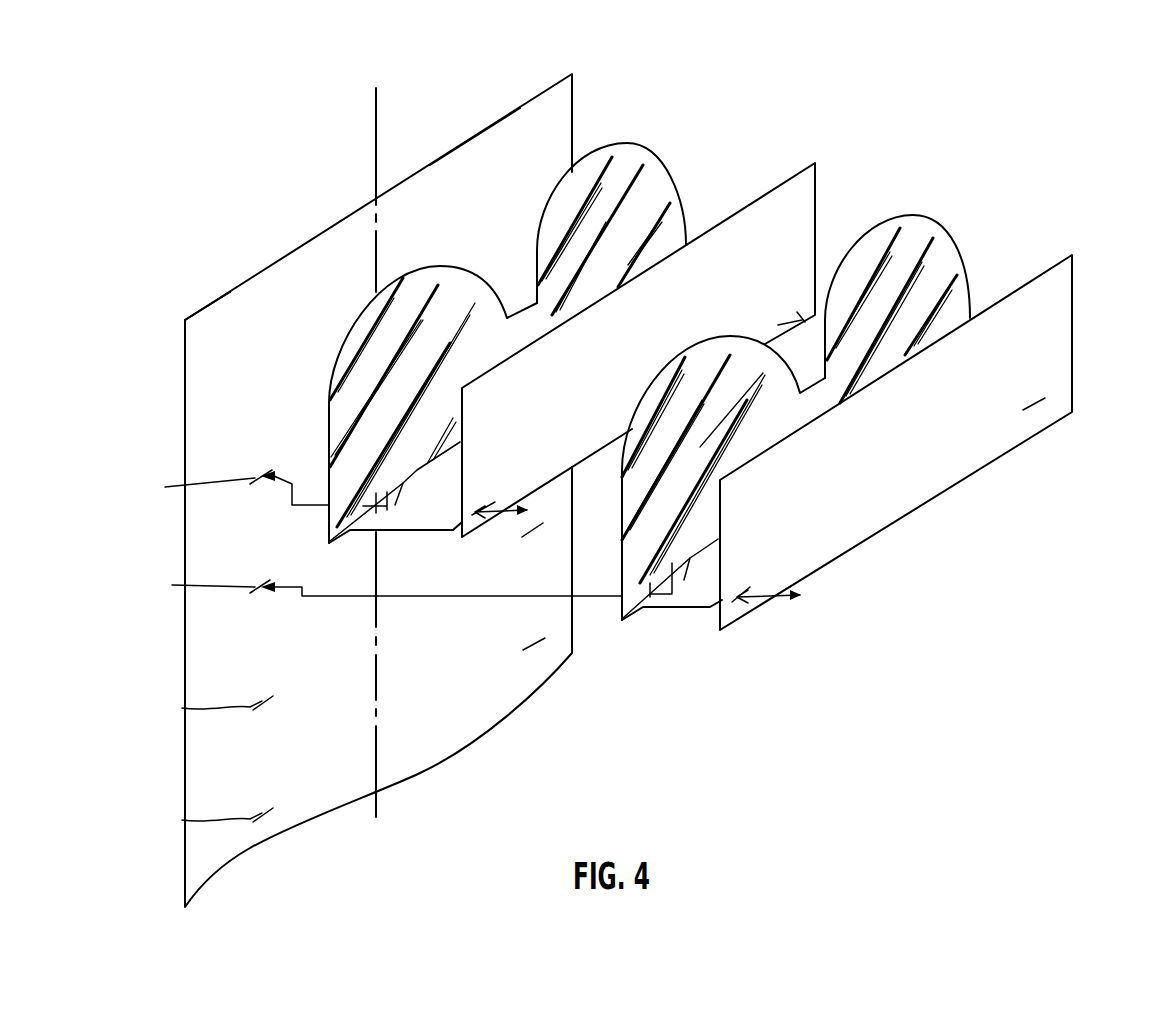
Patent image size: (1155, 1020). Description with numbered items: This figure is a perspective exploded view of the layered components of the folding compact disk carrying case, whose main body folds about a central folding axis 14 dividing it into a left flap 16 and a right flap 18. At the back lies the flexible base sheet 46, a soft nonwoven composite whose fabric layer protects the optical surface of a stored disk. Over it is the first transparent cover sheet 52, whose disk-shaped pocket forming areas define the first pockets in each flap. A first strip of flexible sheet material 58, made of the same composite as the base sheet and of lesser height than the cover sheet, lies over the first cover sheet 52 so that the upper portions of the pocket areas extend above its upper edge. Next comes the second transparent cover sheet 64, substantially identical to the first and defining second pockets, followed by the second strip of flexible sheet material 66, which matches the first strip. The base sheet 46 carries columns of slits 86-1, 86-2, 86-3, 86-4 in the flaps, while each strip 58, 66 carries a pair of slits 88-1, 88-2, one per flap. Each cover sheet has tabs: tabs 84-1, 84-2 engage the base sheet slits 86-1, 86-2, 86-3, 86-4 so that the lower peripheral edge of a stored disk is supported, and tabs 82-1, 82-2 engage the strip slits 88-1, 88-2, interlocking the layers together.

The central folding axis 14 is at (370, 425).
The left flap 16 is at (313, 282).
The right flap 18 is at (491, 165).
The flexible base sheet 46 is at (207, 328).
The first transparent cover sheet 52 is at (631, 156).
The first strip of flexible sheet material 58 is at (792, 193).
The second transparent cover sheet 64 is at (923, 235).
The second strip of flexible sheet material 66 is at (1037, 302).
The tab 82-1 is at (350, 531).
The tab 82-2 is at (628, 608).
The tab 84-1 is at (396, 506).
The tab 84-2 is at (685, 580).
The slit 86-1 is at (228, 487).
The slit 86-2 is at (377, 586).
The slit 86-3 is at (576, 547).
The slit 86-4 is at (563, 695).
The slit 88-1 is at (815, 320).
The slit 88-2 is at (1040, 405).